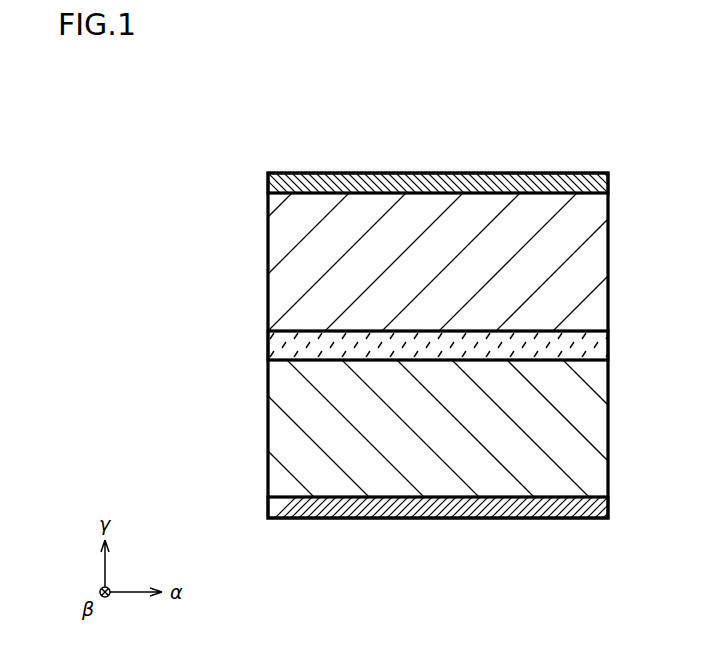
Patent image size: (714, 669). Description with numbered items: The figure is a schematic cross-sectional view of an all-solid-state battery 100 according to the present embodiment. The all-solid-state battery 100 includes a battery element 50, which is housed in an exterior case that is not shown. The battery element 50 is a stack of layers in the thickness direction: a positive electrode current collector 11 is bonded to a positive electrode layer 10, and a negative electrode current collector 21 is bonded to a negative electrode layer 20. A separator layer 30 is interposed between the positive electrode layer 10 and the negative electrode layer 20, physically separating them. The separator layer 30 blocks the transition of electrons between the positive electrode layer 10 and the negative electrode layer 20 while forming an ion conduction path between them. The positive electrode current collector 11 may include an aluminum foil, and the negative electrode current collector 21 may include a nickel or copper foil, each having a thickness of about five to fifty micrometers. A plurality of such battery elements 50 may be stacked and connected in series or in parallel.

The all-solid-state battery 100 is at (206, 118).
The battery element 50 is at (213, 174).
The positive electrode current collector 11 is at (268, 188).
The positive electrode layer 10 is at (268, 263).
The separator layer 30 is at (268, 352).
The negative electrode layer 20 is at (268, 436).
The negative electrode current collector 21 is at (268, 511).